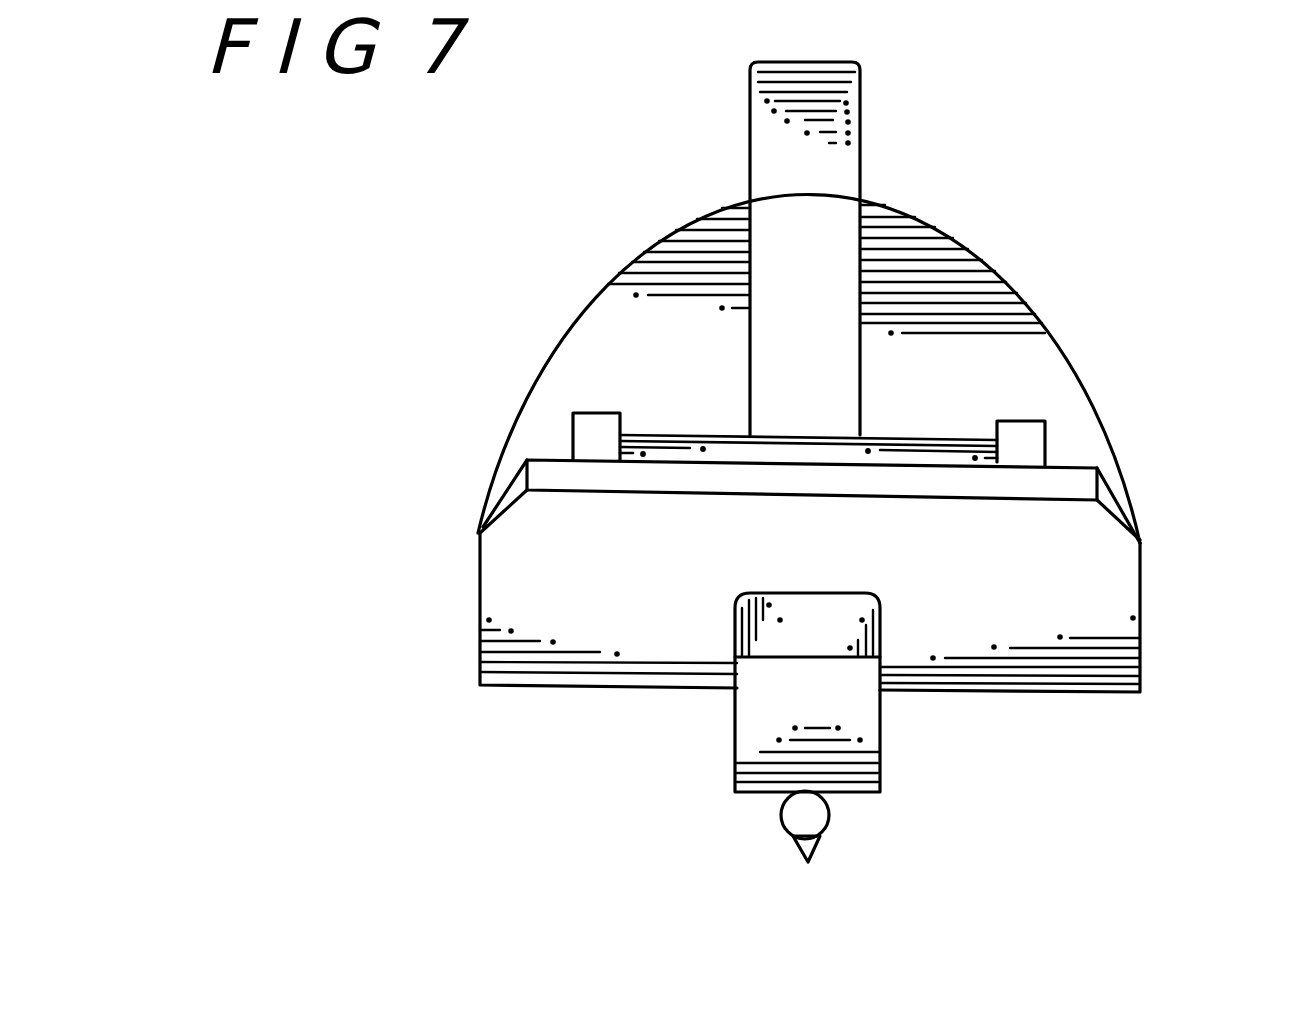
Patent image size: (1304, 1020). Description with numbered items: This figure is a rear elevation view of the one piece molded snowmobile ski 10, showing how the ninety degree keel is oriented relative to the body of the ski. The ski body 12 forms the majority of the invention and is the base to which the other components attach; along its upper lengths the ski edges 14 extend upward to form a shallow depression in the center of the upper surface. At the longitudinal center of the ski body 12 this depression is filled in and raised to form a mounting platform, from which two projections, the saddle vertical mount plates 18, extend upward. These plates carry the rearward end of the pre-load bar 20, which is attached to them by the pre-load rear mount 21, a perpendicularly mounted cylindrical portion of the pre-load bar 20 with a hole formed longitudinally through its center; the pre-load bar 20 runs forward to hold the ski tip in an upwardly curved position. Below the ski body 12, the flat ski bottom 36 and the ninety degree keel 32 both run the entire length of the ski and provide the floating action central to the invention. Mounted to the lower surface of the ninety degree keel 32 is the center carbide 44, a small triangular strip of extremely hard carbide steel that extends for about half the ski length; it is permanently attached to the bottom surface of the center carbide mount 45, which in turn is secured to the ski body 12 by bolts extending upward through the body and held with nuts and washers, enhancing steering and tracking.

The one piece molded snowmobile ski 10 is at (440, 332).
The ski body 12 is at (480, 430).
The ski edges 14 is at (520, 492).
The saddle vertical mount plates 18 is at (598, 413).
The pre-load bar 20 is at (865, 141).
The pre-load rear mount 21 is at (955, 437).
The ninety degree keel 32 is at (883, 725).
The flat ski bottom 36 is at (552, 688).
The center carbide 44 is at (822, 848).
The center carbide mount 45 is at (777, 815).